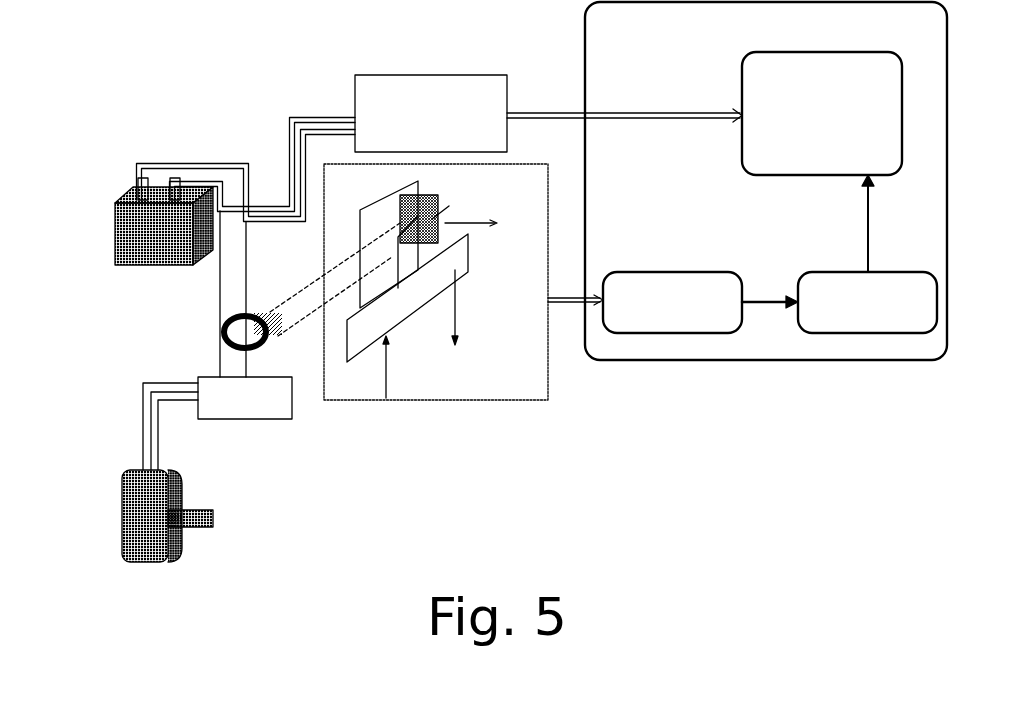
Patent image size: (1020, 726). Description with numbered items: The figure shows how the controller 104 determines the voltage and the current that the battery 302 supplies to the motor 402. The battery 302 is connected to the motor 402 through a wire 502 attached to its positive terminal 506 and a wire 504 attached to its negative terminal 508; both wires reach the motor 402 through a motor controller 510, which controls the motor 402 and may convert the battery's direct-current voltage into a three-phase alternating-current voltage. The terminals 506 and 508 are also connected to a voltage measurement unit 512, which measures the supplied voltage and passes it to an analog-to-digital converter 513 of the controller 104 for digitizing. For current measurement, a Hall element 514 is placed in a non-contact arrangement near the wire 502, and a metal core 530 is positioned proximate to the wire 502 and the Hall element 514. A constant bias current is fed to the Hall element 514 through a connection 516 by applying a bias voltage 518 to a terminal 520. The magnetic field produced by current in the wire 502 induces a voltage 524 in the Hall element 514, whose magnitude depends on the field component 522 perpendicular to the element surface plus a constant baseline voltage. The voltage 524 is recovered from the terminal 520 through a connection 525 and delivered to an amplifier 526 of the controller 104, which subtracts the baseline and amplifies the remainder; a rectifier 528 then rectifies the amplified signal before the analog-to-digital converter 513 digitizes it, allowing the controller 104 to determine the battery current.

The controller 104 is at (847, 35).
The battery 302 is at (128, 200).
The motor 402 is at (136, 470).
The wire 502 is at (245, 358).
The wire 504 is at (220, 307).
The positive terminal 506 is at (177, 180).
The negative terminal 508 is at (146, 181).
The motor controller 510 is at (258, 409).
The voltage measurement unit 512 is at (451, 125).
The analog-to-digital converter 513 is at (804, 166).
The Hall element 514 is at (431, 243).
The connection 516 is at (368, 208).
The bias voltage 518 is at (406, 367).
The terminal 520 is at (414, 266).
The component of the magnetic field 522 is at (450, 217).
The voltage 524 is at (476, 307).
The connection 525 is at (449, 208).
The amplifier 526 is at (654, 328).
The rectifier 528 is at (850, 328).
The metal core 530 is at (222, 333).